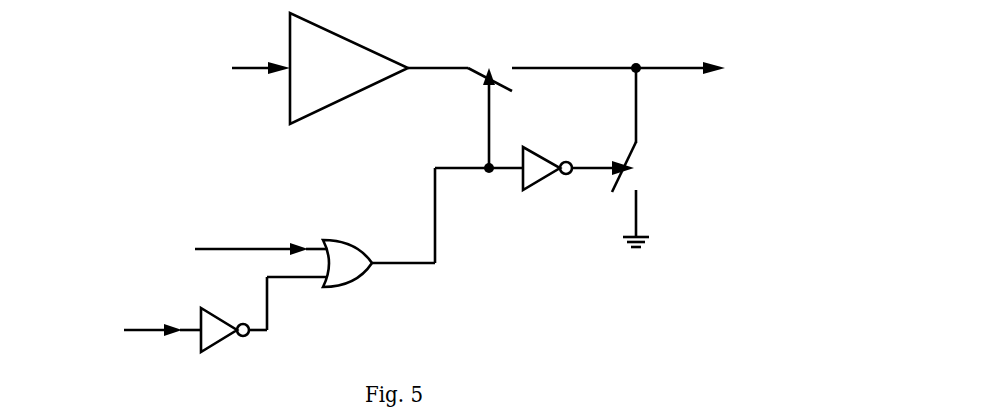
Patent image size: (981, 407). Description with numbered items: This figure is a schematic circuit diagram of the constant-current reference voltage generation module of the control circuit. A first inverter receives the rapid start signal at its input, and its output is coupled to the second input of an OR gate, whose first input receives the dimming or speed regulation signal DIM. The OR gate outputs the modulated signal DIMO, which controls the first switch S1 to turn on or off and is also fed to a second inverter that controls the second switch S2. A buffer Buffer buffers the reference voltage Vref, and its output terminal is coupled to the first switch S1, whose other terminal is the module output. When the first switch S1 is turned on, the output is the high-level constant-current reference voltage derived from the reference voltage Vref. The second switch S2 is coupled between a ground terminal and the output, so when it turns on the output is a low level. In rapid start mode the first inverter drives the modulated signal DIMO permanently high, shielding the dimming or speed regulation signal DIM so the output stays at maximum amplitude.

The first switch S1 is at (552, 104).
The second switch S2 is at (641, 157).
The reference voltage Vref is at (227, 68).
The buffer Buffer is at (379, 68).
The dimming or speed regulation signal DIM is at (237, 250).
The modulated signal DIMO is at (404, 227).